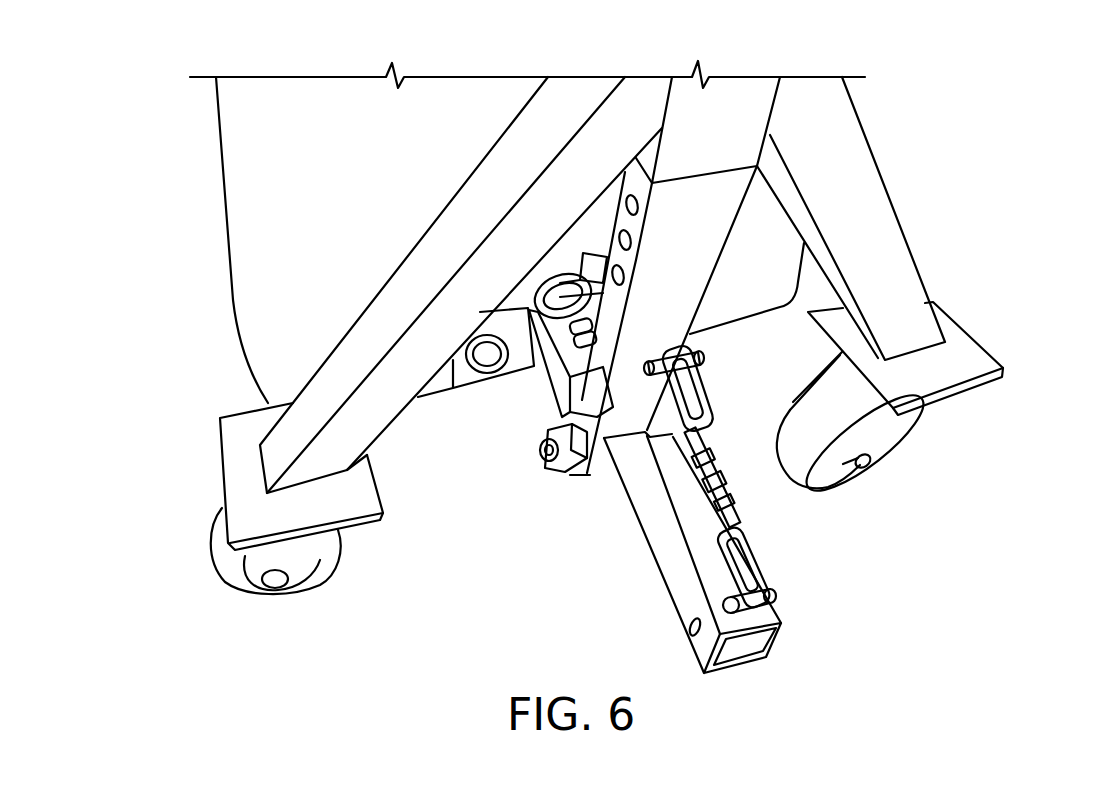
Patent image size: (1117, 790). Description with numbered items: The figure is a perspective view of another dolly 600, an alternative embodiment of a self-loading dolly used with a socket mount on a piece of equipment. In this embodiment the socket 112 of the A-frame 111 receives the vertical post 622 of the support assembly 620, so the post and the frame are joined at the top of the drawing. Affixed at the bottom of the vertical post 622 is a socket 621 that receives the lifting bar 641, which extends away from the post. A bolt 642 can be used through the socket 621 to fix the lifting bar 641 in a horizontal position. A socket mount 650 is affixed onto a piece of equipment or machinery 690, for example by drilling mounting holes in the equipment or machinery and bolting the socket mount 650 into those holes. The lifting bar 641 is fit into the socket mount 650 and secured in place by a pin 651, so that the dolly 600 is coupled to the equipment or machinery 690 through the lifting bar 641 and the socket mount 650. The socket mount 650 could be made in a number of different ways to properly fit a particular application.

The dolly 600 is at (938, 167).
The A-frame 111 is at (830, 148).
The socket 112 is at (722, 108).
The vertical post 622 is at (672, 270).
The support assembly 620 is at (478, 558).
The socket 621 is at (586, 477).
The lifting bar 641 is at (658, 581).
The bolt 642 is at (548, 472).
The socket mount 650 is at (545, 386).
The pin 651 is at (537, 317).
The equipment or machinery 690 is at (250, 283).